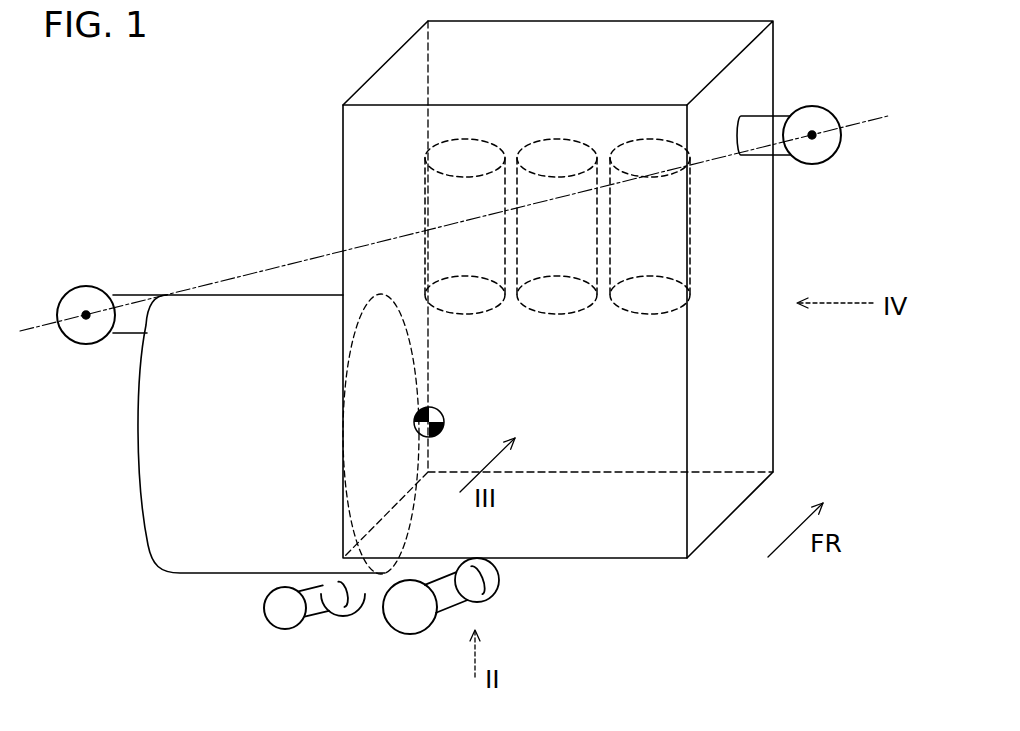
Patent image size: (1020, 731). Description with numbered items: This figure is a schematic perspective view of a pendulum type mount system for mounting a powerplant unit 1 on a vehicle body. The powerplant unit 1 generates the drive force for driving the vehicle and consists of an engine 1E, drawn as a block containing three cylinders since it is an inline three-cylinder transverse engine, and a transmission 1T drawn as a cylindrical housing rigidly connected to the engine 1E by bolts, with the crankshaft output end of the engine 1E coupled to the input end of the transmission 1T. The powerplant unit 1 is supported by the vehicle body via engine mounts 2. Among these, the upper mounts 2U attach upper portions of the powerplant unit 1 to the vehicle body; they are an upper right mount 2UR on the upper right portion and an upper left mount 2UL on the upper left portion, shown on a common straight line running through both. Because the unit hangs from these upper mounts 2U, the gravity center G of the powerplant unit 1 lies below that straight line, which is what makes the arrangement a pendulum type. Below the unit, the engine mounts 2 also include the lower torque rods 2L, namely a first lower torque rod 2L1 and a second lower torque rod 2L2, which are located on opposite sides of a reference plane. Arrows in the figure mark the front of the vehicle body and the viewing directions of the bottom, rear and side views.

The powerplant unit 1 is at (197, 98).
The engine 1E is at (357, 195).
The transmission 1T is at (258, 305).
The engine mounts 2 is at (470, 402).
The upper mounts 2U is at (479, 225).
The lower torque rods 2L is at (455, 628).
The upper left mount 2UL is at (77, 292).
The upper right mount 2UR is at (822, 158).
The first lower torque rod 2L1 is at (455, 587).
The second lower torque rod 2L2 is at (295, 617).
The gravity center G is at (440, 415).